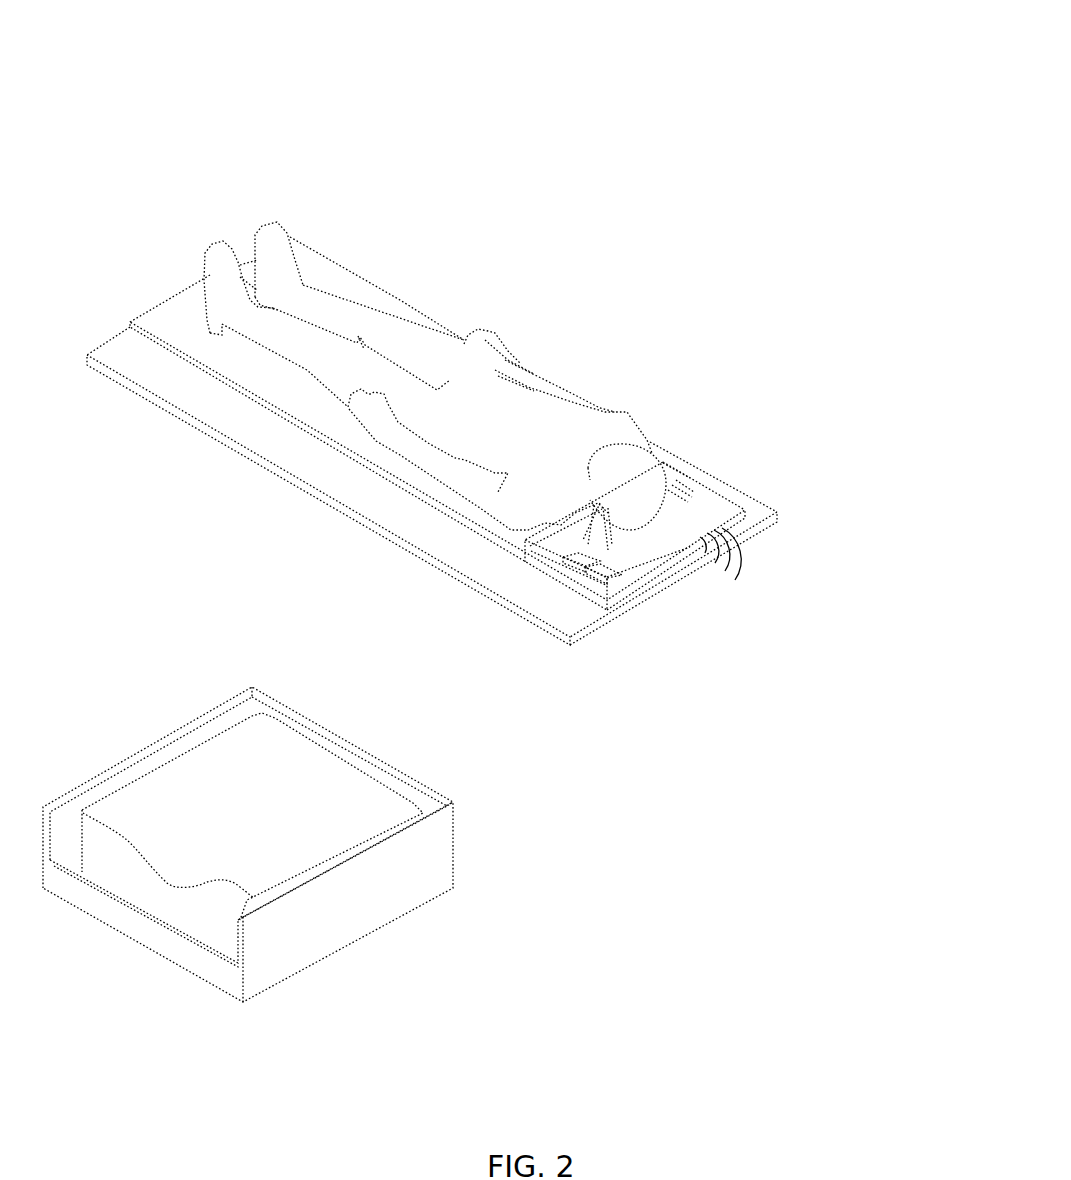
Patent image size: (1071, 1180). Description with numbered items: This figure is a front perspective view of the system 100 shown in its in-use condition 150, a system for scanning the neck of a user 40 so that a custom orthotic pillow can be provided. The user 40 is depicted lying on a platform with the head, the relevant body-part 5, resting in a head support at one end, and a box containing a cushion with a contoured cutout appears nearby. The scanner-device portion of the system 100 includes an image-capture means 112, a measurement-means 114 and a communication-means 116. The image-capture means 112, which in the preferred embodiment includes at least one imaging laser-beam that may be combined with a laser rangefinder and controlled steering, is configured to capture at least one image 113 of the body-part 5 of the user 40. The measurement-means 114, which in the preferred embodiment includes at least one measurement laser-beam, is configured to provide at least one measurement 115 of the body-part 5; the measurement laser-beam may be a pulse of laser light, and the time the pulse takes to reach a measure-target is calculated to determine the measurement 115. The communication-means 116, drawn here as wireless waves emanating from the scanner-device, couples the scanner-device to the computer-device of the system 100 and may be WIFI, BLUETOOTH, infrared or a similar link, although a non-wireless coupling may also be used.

The system 100 is at (856, 42).
The in-use condition 150 is at (857, 71).
The user 40 is at (428, 402).
The body-part 5 is at (660, 508).
The image-capture means 112 is at (768, 468).
The image 113 is at (609, 598).
The measurement-means 114 is at (437, 473).
The measurement 115 is at (557, 638).
The communication-means 116 is at (663, 641).